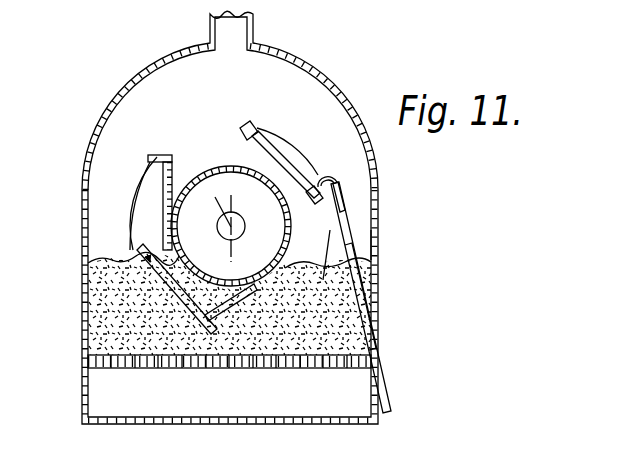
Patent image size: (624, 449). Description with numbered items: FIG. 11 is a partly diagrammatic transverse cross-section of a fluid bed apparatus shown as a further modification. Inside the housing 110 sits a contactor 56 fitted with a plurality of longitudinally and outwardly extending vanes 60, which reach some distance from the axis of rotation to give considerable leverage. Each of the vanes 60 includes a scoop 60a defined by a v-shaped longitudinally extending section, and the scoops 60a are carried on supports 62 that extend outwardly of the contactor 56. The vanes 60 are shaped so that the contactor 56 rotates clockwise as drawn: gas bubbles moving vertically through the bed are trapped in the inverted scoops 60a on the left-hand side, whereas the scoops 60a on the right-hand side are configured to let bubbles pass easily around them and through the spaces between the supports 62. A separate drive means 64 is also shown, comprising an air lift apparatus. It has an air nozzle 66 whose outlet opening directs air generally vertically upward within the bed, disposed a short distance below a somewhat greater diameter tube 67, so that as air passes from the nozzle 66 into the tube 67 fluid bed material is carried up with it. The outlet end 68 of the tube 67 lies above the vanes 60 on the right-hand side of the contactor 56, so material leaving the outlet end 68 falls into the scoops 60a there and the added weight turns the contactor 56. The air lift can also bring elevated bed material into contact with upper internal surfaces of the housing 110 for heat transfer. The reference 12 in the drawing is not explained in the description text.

The housing 110 is at (328, 82).
The cleaning chamber 12 is at (160, 100).
The contactor 56 is at (318, 133).
The vanes 60 is at (177, 165).
The scoops 60a is at (258, 130).
The supports 62 is at (163, 187).
The drive means 64 is at (366, 243).
The air nozzle 66 is at (355, 290).
The tube 67 is at (342, 197).
The outlet end 68 is at (333, 178).